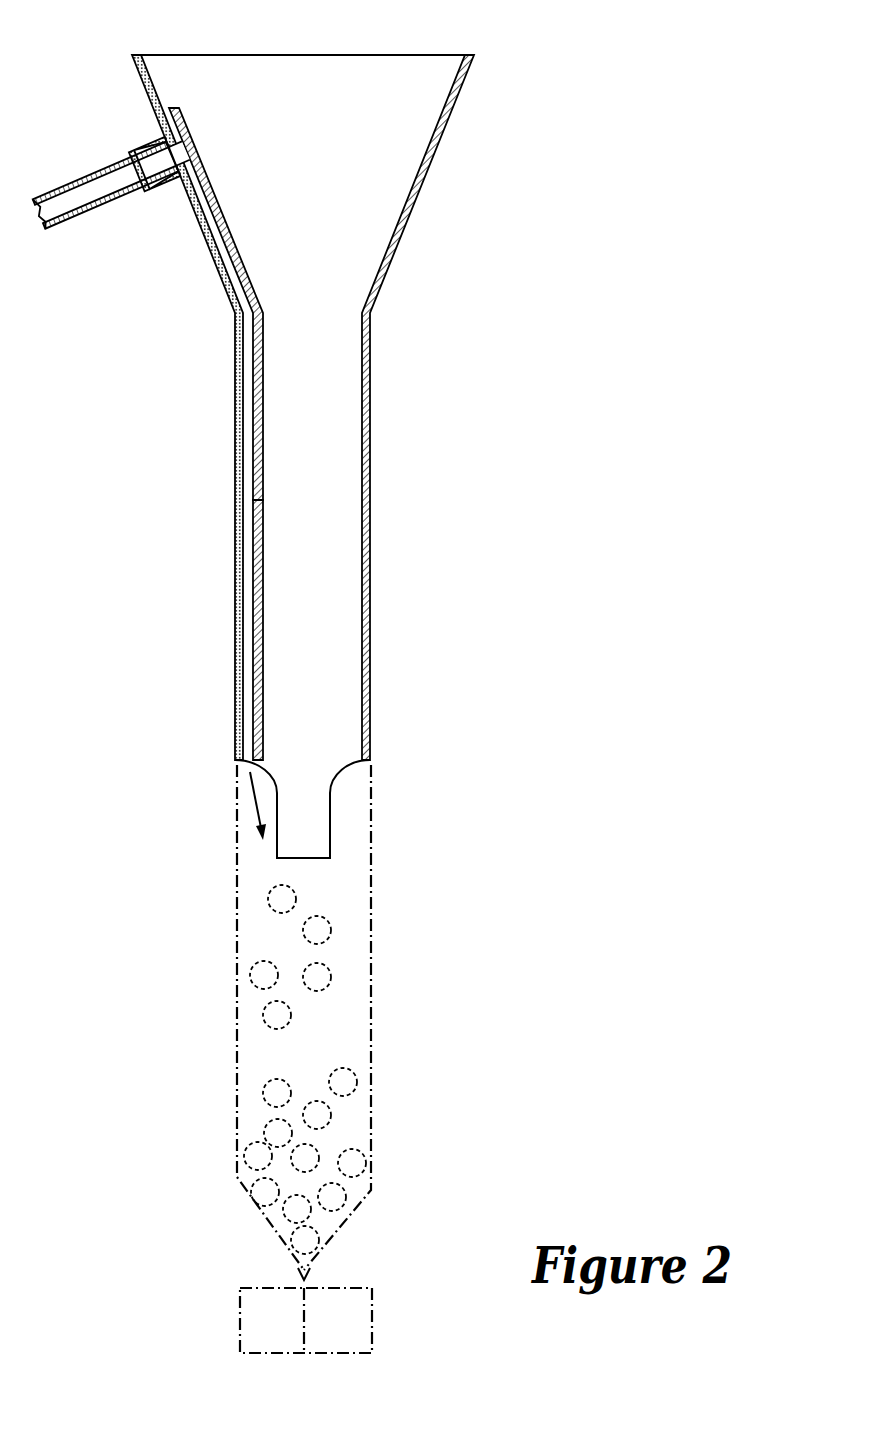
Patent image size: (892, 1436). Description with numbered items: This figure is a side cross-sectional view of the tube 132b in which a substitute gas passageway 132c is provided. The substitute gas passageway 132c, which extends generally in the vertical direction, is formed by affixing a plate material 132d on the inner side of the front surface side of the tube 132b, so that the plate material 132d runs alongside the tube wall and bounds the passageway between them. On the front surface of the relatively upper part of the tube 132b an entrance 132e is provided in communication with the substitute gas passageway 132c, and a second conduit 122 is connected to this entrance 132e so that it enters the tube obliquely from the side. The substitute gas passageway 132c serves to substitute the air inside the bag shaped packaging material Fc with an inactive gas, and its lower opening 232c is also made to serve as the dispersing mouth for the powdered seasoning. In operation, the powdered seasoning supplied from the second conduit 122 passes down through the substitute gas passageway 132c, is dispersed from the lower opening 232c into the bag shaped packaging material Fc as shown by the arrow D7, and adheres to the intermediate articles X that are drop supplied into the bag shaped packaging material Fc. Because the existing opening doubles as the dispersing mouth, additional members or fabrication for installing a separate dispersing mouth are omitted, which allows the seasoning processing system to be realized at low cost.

The tube 132b is at (368, 68).
The substitute gas passageway 132c is at (250, 368).
The plate material 132d is at (190, 128).
The entrance 132e is at (143, 152).
The second conduit 122 is at (68, 185).
The lower opening 232c is at (253, 750).
The arrow D7 is at (261, 816).
The bag shaped packaging material Fc is at (372, 900).
The intermediate articles X is at (256, 975).